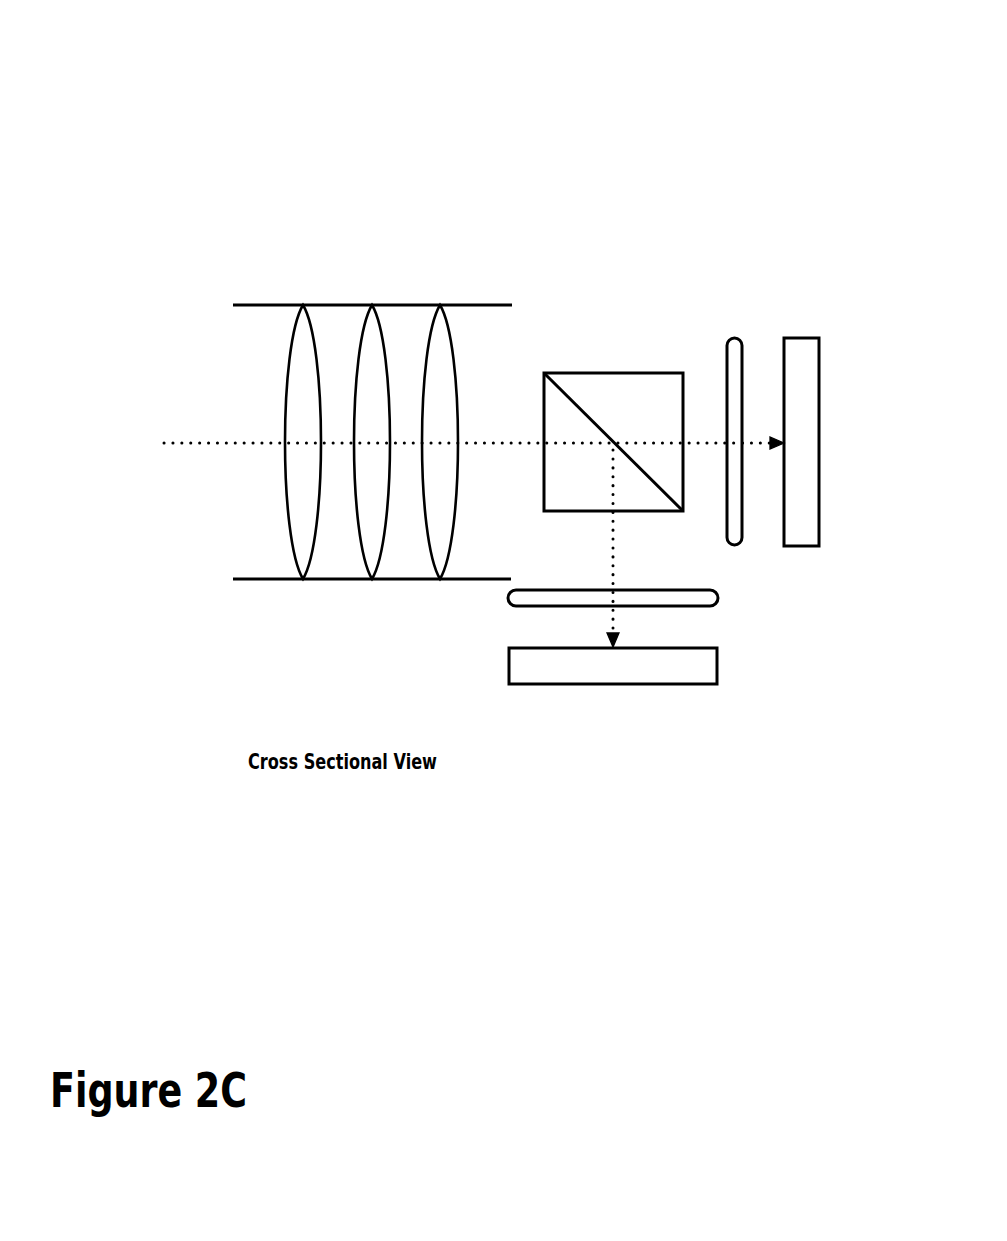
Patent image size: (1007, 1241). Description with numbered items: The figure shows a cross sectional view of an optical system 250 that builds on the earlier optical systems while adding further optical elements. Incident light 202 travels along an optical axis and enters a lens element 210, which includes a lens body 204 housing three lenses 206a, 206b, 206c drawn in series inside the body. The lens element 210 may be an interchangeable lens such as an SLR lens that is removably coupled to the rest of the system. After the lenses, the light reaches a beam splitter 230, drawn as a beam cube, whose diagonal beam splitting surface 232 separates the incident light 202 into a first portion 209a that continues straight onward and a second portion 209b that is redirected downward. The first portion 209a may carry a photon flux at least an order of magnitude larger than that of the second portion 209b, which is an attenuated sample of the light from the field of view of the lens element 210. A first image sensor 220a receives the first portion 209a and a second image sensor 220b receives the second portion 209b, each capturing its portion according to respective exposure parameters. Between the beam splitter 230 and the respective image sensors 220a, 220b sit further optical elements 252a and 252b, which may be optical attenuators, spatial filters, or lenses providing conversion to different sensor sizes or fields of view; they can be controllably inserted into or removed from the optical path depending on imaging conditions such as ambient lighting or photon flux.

The optical system 250 is at (667, 81).
The lens element 210 is at (400, 231).
The lens body 204 is at (243, 303).
The lens 206a is at (316, 320).
The lens 206b is at (385, 318).
The lens 206c is at (453, 318).
The incident light 202 is at (173, 440).
The beam splitter 230 is at (565, 372).
The beam splitting surface 232 is at (600, 428).
The further optical element 252a is at (733, 338).
The first image sensor 220a is at (811, 338).
The first portion of light 209a is at (748, 442).
The second portion of light 209b is at (614, 614).
The further optical element 252b is at (718, 598).
The second image sensor 220b is at (717, 668).